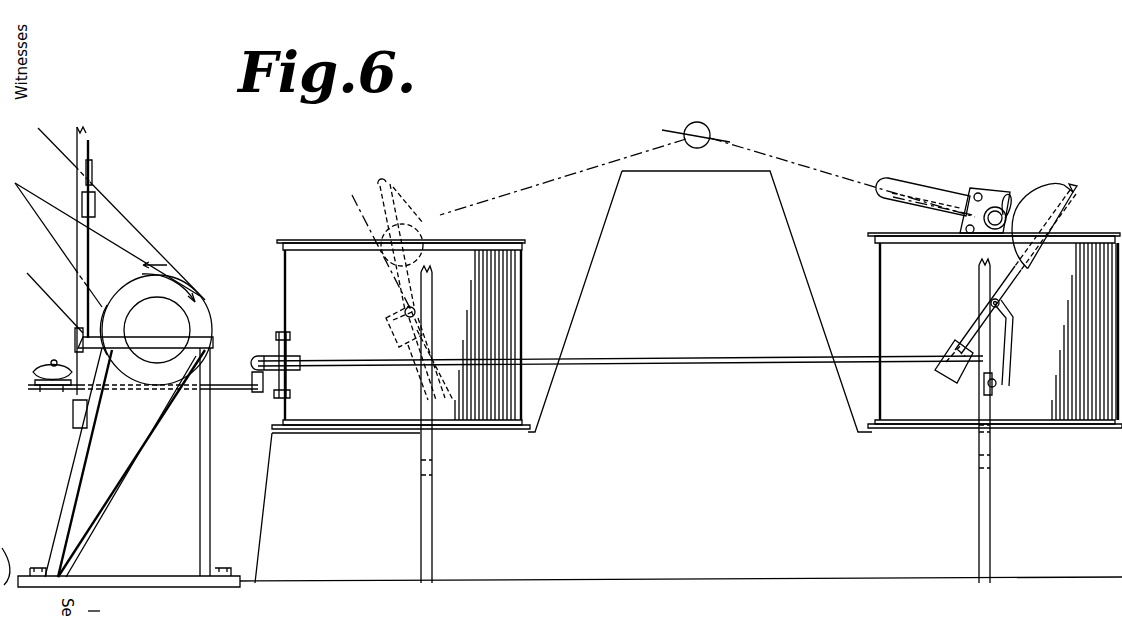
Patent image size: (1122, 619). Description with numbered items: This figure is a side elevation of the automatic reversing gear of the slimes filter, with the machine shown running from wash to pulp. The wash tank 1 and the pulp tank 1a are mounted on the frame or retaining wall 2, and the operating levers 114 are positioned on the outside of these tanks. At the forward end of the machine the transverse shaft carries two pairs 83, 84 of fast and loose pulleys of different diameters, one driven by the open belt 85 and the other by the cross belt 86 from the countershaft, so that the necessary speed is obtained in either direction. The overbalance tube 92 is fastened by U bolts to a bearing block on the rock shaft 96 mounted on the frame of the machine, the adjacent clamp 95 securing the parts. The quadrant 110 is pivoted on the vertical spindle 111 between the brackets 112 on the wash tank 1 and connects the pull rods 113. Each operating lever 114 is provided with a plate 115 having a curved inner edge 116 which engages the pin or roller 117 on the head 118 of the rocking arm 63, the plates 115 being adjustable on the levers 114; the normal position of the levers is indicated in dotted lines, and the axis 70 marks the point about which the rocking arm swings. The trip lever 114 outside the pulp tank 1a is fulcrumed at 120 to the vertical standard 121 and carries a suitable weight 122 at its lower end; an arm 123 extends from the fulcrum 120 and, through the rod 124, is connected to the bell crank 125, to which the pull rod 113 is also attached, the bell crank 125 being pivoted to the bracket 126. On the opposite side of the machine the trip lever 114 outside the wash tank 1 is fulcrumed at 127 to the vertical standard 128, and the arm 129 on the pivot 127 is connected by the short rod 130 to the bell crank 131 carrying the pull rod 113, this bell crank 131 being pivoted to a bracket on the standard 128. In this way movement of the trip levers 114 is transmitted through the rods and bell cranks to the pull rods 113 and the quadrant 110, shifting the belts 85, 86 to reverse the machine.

The wash tank 1 is at (401, 334).
The pulp tank 1a is at (995, 330).
The frame or retaining wall 2 is at (563, 377).
The rocking arm 63 is at (895, 192).
The pivot point 70 is at (711, 140).
The pair of fast and loose pulleys 83 is at (205, 316).
The pair of fast and loose pulleys 84 is at (156, 330).
The open belt 85 is at (139, 231).
The cross belt 86 is at (108, 250).
The overbalance tube 92 is at (143, 378).
The clamp 95 is at (63, 392).
The rock shaft 96 is at (129, 462).
The quadrant 110 is at (289, 370).
The vertical spindle 111 is at (286, 358).
The brackets 112 is at (286, 345).
The pull rods 113 is at (713, 374).
The operating levers 114 is at (422, 237).
The plate 115 is at (390, 186).
The curved inner edge 116 is at (403, 207).
The pin or roller 117 is at (1009, 201).
The head 118 is at (952, 215).
The fulcrum or pivot 120 is at (1000, 305).
The vertical standard 121 is at (979, 297).
The weight 122 is at (420, 396).
The arm 123 is at (1004, 327).
The rod 124 is at (1008, 350).
The bell crank 125 is at (982, 392).
The bracket 126 is at (988, 407).
The fulcrum or pivot 127 is at (416, 313).
The vertical standard 128 is at (433, 490).
The arm 129 is at (402, 312).
The short rod 130 is at (383, 325).
The bell crank 131 is at (410, 348).